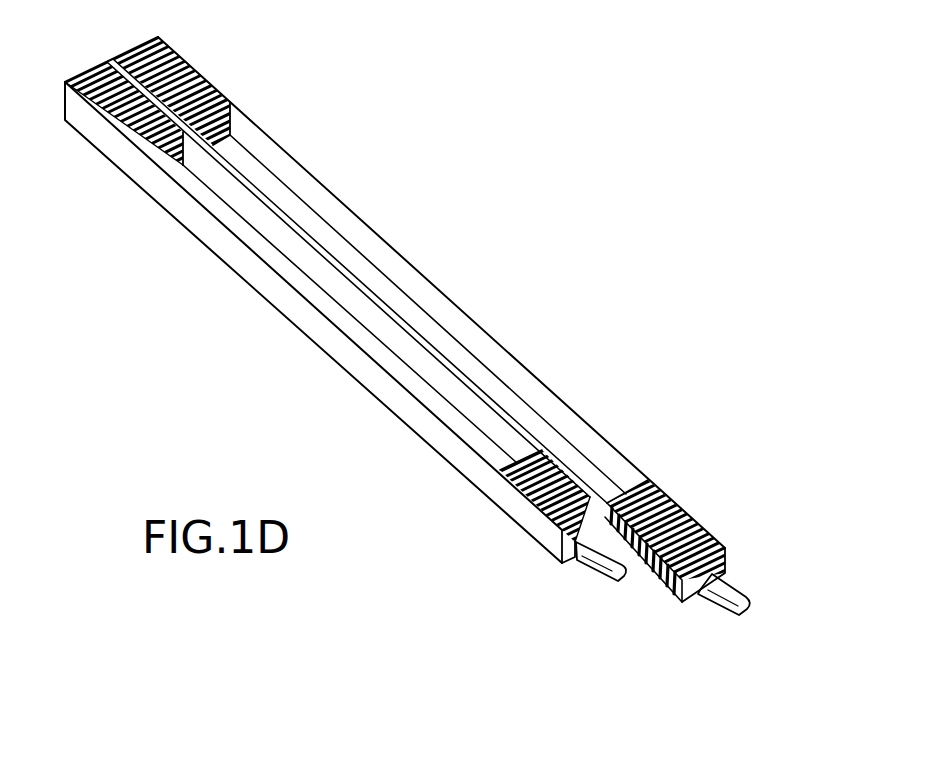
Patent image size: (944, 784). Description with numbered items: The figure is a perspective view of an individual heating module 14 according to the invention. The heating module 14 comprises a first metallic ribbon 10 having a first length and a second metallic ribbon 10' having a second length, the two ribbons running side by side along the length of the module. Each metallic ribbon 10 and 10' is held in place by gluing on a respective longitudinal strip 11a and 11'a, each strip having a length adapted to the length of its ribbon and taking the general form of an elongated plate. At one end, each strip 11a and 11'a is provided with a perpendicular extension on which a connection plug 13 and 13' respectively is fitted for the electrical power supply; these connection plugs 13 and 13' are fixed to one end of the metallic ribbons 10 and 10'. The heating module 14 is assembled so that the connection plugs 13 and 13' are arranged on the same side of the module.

The first metallic ribbon 10 is at (366, 281).
The second metallic ribbon 10' is at (313, 306).
The longitudinal strip 11a is at (487, 337).
The longitudinal strip 11'a is at (313, 322).
The connection plug 13 is at (471, 382).
The connection plug 13' is at (471, 382).
The heating module 14 is at (228, 89).